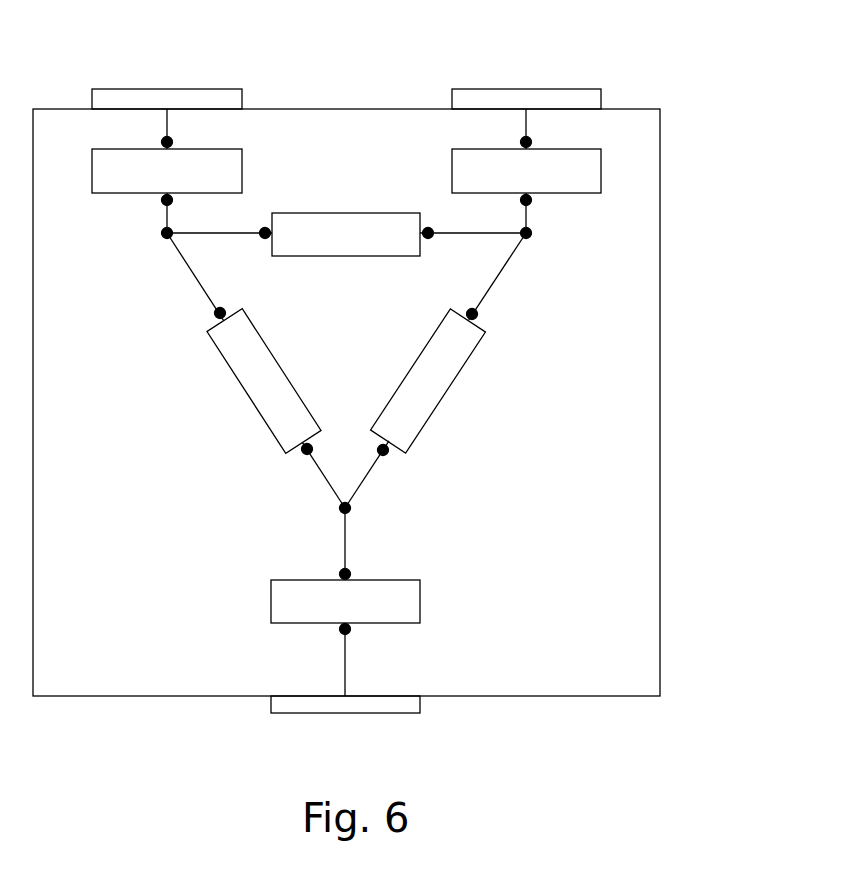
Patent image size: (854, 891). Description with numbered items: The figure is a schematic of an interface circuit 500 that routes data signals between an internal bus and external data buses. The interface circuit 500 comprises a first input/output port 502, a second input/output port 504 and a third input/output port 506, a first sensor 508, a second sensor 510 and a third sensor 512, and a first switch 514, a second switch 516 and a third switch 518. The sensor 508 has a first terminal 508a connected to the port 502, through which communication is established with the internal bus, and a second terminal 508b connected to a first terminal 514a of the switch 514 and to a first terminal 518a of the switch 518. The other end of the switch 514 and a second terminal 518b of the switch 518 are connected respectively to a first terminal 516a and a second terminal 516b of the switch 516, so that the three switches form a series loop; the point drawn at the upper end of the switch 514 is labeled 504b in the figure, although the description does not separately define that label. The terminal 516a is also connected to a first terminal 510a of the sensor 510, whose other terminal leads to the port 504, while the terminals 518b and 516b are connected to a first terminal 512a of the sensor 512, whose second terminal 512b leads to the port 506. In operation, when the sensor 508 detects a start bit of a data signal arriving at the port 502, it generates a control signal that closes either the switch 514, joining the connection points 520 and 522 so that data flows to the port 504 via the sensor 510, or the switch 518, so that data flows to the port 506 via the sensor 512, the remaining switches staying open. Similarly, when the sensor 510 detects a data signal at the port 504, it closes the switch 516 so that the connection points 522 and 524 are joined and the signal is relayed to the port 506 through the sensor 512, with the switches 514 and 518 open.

The interface circuit 500 is at (660, 412).
The first input/output port 502 is at (377, 713).
The second input/output port 504 is at (158, 88).
The node 504b is at (214, 313).
The third input/output port 506 is at (520, 89).
The first sensor 508 is at (420, 604).
The first terminal of first sensor 508a is at (351, 632).
The second terminal of first sensor 508b is at (341, 570).
The second sensor 510 is at (242, 172).
The first terminal of second sensor 510a is at (172, 202).
The third sensor 512 is at (450, 168).
The first terminal of third sensor 512a is at (532, 201).
The second terminal of third sensor 512b is at (532, 140).
The first switch 514 is at (222, 357).
The first terminal of first switch 514a is at (303, 455).
The second switch 516 is at (383, 256).
The first terminal of second switch 516a is at (262, 238).
The second terminal of second switch 516b is at (433, 229).
The third switch 518 is at (450, 385).
The first terminal of third switch 518a is at (389, 454).
The second terminal of third switch 518b is at (478, 314).
The connection point 520 is at (351, 510).
The connection point 522 is at (162, 232).
The connection point 524 is at (532, 236).